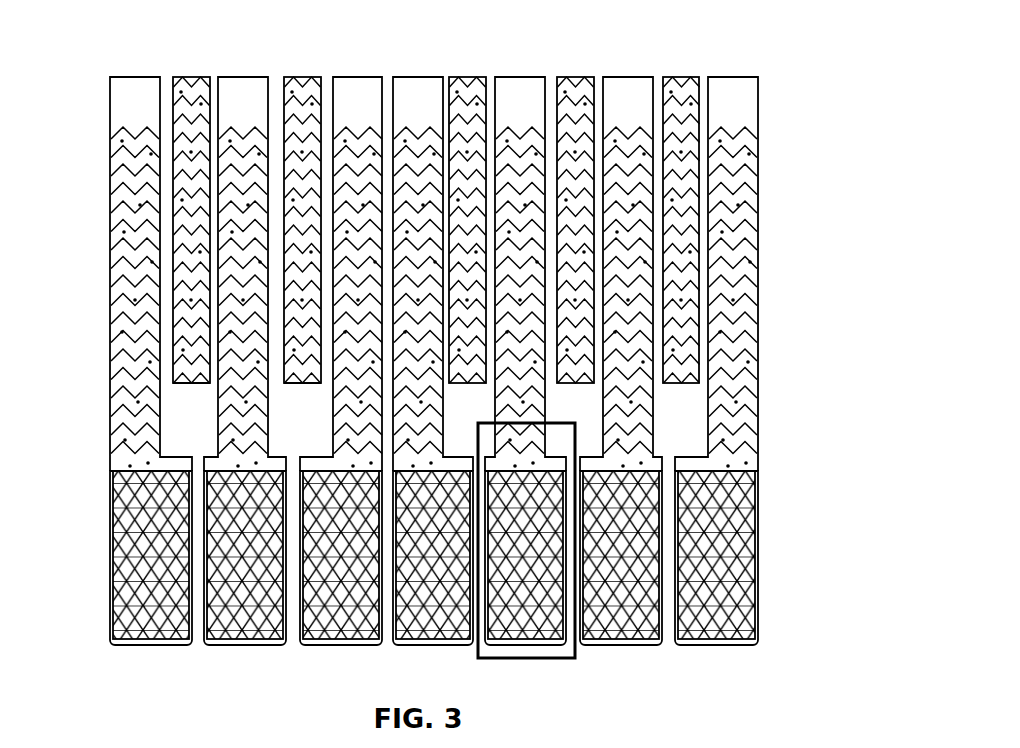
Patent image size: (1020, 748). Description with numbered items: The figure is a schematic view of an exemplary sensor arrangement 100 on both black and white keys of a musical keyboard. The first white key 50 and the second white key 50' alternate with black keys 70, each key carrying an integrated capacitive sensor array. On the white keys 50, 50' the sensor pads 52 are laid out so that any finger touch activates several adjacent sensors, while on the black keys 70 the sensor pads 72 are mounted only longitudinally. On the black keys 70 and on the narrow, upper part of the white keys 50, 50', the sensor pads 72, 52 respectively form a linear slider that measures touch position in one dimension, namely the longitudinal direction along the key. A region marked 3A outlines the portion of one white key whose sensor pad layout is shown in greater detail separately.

The first white key 50 is at (438, 244).
The second white key 50' is at (433, 244).
The black key 70 is at (192, 77).
The capacitive sensor array 52 is at (110, 300).
The capacitive sensor array 72 is at (200, 383).
The semiconductor device 100 is at (781, 177).
The cross-section region 3A is at (507, 660).